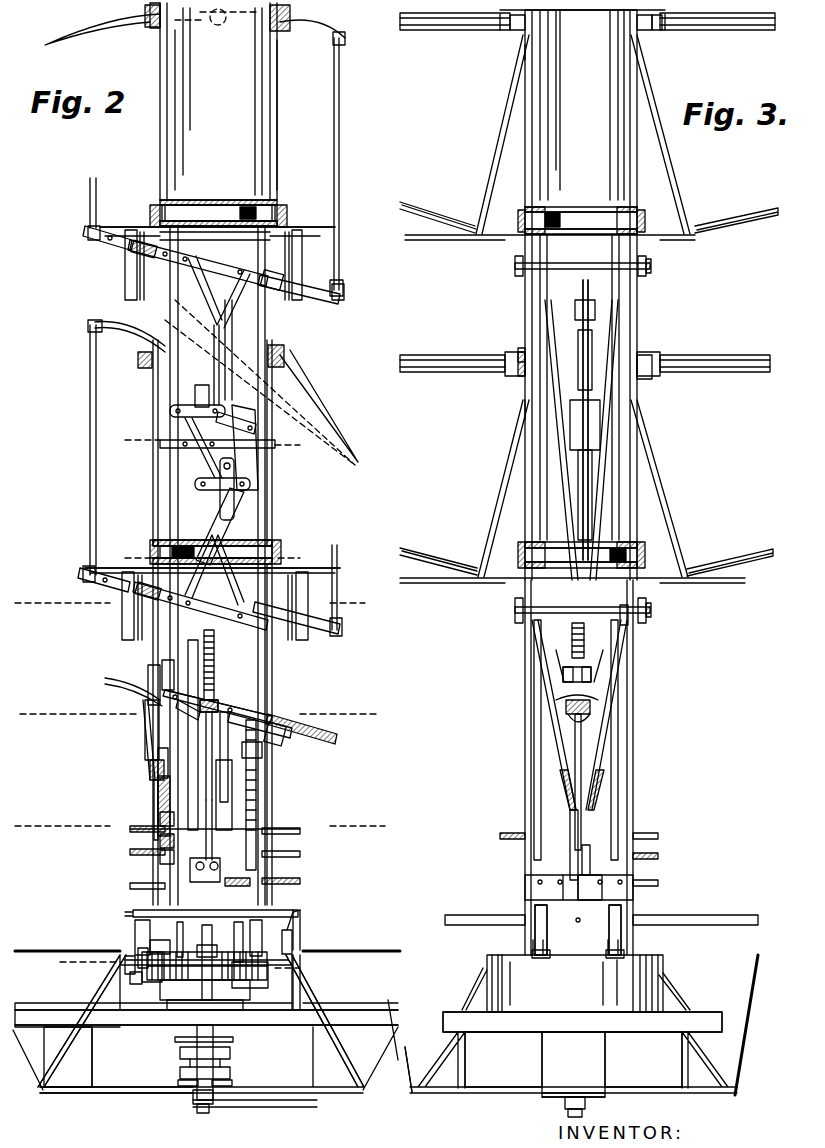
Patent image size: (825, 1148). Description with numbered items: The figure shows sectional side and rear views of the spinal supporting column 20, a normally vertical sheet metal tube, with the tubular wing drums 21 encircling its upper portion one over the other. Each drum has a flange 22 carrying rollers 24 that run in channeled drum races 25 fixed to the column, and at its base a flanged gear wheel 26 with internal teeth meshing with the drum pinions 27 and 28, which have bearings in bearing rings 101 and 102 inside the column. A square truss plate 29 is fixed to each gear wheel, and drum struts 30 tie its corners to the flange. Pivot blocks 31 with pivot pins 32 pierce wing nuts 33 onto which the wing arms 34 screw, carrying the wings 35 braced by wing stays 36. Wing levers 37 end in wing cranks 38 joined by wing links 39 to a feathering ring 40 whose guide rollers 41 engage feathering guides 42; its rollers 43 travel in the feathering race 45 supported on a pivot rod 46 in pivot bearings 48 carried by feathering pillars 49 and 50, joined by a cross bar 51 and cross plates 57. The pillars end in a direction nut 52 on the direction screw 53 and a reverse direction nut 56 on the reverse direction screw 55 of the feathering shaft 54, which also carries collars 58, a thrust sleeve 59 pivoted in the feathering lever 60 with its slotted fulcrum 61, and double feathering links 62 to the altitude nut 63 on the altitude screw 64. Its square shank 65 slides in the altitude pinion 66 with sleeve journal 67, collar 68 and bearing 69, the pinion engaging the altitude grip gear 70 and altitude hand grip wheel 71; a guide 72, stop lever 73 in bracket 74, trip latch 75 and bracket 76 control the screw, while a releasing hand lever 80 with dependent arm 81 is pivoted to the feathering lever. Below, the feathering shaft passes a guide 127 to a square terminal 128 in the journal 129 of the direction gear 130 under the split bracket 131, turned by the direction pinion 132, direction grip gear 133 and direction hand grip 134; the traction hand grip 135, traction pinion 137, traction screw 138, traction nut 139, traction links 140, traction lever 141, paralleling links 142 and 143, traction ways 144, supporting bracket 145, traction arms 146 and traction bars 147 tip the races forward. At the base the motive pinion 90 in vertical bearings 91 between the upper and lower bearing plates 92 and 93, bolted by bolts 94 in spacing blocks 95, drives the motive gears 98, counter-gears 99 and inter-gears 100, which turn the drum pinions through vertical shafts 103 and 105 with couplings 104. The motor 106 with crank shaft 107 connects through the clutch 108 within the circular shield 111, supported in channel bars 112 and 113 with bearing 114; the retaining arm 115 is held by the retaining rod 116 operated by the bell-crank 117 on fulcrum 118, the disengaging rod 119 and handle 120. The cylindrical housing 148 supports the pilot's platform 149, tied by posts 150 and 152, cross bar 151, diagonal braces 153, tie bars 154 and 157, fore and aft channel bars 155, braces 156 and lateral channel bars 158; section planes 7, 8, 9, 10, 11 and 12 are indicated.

In FIG. 2, the section plane 7— 7 is at (208, 825).
In FIG. 2, the section plane 8— 8 is at (207, 709).
In FIG. 2, the section plane 9— 9 is at (213, 442).
In FIG. 2, the section plane 10— 10 is at (199, 592).
In FIG. 2, the section plane 11— 11 is at (178, 965).
In FIG. 2, the section plane 12— 12 is at (210, 558).
In FIG. 2, the spinal supporting column 20 is at (268, 120).
In FIG. 3, the spinal supporting column 20 is at (535, 110).
In FIG. 2, the wing drums 21 is at (277, 156).
In FIG. 3, the wing drums 21 is at (525, 45).
In FIG. 2, the flanges 22 is at (282, 30).
In FIG. 3, the flanges 22 is at (645, 32).
In FIG. 2, the rollers 24 is at (145, 12).
In FIG. 3, the rollers 24 is at (518, 355).
In FIG. 2, the drum races 25 is at (150, 6).
In FIG. 3, the drum races 25 is at (520, 350).
In FIG. 2, the flanged gear wheel 26 is at (152, 214).
In FIG. 3, the flanged gear wheel 26 is at (525, 216).
In FIG. 2, the upper drum pinion 27 is at (238, 213).
In FIG. 3, the upper drum pinion 27 is at (560, 218).
In FIG. 2, the lower drum pinion 28 is at (170, 552).
In FIG. 3, the lower drum pinion 28 is at (630, 554).
In FIG. 2, the truss plate 29 is at (312, 227).
In FIG. 3, the truss plate 29 is at (680, 238).
In FIG. 3, the drum struts 30 is at (503, 145).
In FIG. 3, the pivot blocks 31 is at (665, 30).
In FIG. 3, the pivot pins 32 is at (705, 30).
In FIG. 3, the wing nut 33 is at (510, 30).
In FIG. 2, the wing arms 34 is at (218, 25).
In FIG. 3, the wing arms 34 is at (424, 30).
In FIG. 2, the wings 35 is at (112, 32).
In FIG. 3, the wing stays 36 is at (421, 210).
In FIG. 2, the wing levers 37 is at (332, 40).
In FIG. 2, the wing cranks 38 is at (345, 36).
In FIG. 2, the wing links 39 is at (333, 126).
In FIG. 2, the feathering ring 40 is at (115, 240).
In FIG. 2, the guide rollers 41 is at (125, 248).
In FIG. 2, the feathering guides 42 is at (296, 258).
In FIG. 2, the rollers 43 is at (280, 300).
In FIG. 2, the feathering race 45 is at (155, 258).
In FIG. 3, the feathering race 45 is at (652, 266).
In FIG. 2, the pivot rod 46 is at (206, 268).
In FIG. 3, the pivot rod 46 is at (515, 268).
In FIG. 3, the pivot bearings 48 is at (518, 258).
In FIG. 3, the feathering pillars 49 is at (610, 388).
In FIG. 2, the feathering pillars 50 is at (213, 746).
In FIG. 3, the feathering pillars 50 is at (556, 740).
In FIG. 3, the cross bar 51 is at (588, 282).
In FIG. 2, the direction nut 52 is at (214, 648).
In FIG. 3, the direction nut 52 is at (586, 643).
In FIG. 3, the direction screw 53 is at (566, 650).
In FIG. 2, the feathering shaft 54 is at (213, 768).
In FIG. 3, the feathering shaft 54 is at (594, 776).
In FIG. 2, the reverse direction screw 55 is at (221, 689).
In FIG. 3, the reverse direction screw 55 is at (594, 700).
In FIG. 2, the reverse direction nut 56 is at (204, 666).
In FIG. 3, the reverse direction nut 56 is at (563, 672).
In FIG. 3, the cross plates 57 is at (594, 668).
In FIG. 2, the collars 58 is at (221, 698).
In FIG. 3, the collars 58 is at (592, 714).
In FIG. 2, the thrust sleeve 59 is at (195, 718).
In FIG. 3, the thrust sleeve 59 is at (570, 718).
In FIG. 2, the feathering lever 60 is at (203, 688).
In FIG. 3, the feathering lever 60 is at (570, 700).
In FIG. 2, the slotted fulcrum 61 is at (260, 716).
In FIG. 2, the double feathering links 62 is at (145, 724).
In FIG. 2, the altitude nut 63 is at (166, 775).
In FIG. 2, the altitude screw 64 is at (166, 794).
In FIG. 2, the square shank 65 is at (150, 885).
In FIG. 2, the altitude pinion 66 is at (166, 820).
In FIG. 2, the sleeve journal 67 is at (166, 840).
In FIG. 2, the collar 68 is at (166, 857).
In FIG. 2, the bearing 69 is at (150, 841).
In FIG. 2, the altitude grip gear 70 is at (270, 826).
In FIG. 3, the altitude grip gear 70 is at (508, 836).
In FIG. 2, the altitude hand grip wheel 71 is at (280, 832).
In FIG. 3, the altitude hand grip wheel 71 is at (658, 836).
In FIG. 2, the guide 72 is at (165, 756).
In FIG. 2, the stop lever 73 is at (148, 744).
In FIG. 2, the bracket 74 is at (145, 768).
In FIG. 2, the trip latch 75 is at (120, 686).
In FIG. 2, the bracket 76 is at (150, 680).
In FIG. 2, the releasing hand lever 80 is at (300, 734).
In FIG. 2, the dependent arm 81 is at (285, 748).
In FIG. 2, the motive pinion 90 is at (248, 988).
In FIG. 2, the vertical bearings 91 is at (208, 955).
In FIG. 2, the upper bearing plate 92 is at (150, 945).
In FIG. 2, the lower bearing plate 93 is at (136, 980).
In FIG. 2, the bolts 94 is at (140, 950).
In FIG. 2, the spacing blocks 95 is at (130, 966).
In FIG. 2, the motive gears 98 is at (130, 978).
In FIG. 2, the counter-gears 99 is at (272, 958).
In FIG. 2, the inter-gears 100 is at (150, 950).
In FIG. 2, the bearing ring 101 is at (198, 203).
In FIG. 3, the bearing ring 101 is at (579, 207).
In FIG. 2, the bearing ring 102 is at (335, 228).
In FIG. 2, the vertical connecting shafts 103 is at (188, 658).
In FIG. 3, the vertical connecting shafts 103 is at (620, 746).
In FIG. 3, the couplings 104 is at (650, 620).
In FIG. 2, the vertical shafts 105 is at (228, 322).
In FIG. 3, the vertical shafts 105 is at (536, 760).
In FIG. 2, the motor 106 is at (218, 1038).
In FIG. 2, the crank shaft 107 is at (180, 1054).
In FIG. 2, the clutch 108 is at (225, 1018).
In FIG. 2, the circular shield 111 is at (207, 981).
In FIG. 2, the upper channel bar 112 is at (162, 1012).
In FIG. 2, the lower channel bar 113 is at (160, 1090).
In FIG. 3, the lower channel bar 113 is at (545, 1100).
In FIG. 2, the bearing 114 is at (190, 1098).
In FIG. 3, the bearing 114 is at (588, 1098).
In FIG. 2, the retaining arm 115 is at (240, 1104).
In FIG. 3, the retaining arm 115 is at (565, 1108).
In FIG. 2, the retaining rod 116 is at (312, 982).
In FIG. 2, the bell-crank 117 is at (295, 925).
In FIG. 2, the fulcrum 118 is at (292, 948).
In FIG. 2, the disengaging rod 119 is at (262, 925).
In FIG. 2, the handle 120 is at (178, 884).
In FIG. 2, the guide 127 is at (218, 792).
In FIG. 3, the guide 127 is at (562, 788).
In FIG. 2, the terminal 128 is at (214, 812).
In FIG. 3, the terminal 128 is at (570, 808).
In FIG. 3, the journal 129 is at (584, 848).
In FIG. 2, the direction gear 130 is at (235, 886).
In FIG. 3, the direction gear 130 is at (550, 888).
In FIG. 3, the split bracket 131 is at (594, 878).
In FIG. 3, the direction pinion 132 is at (612, 888).
In FIG. 3, the direction grip gear 133 is at (525, 878).
In FIG. 2, the direction hand grip 134 is at (280, 880).
In FIG. 3, the direction hand grip 134 is at (658, 882).
In FIG. 2, the traction hand grip 135 is at (280, 854).
In FIG. 3, the traction hand grip 135 is at (658, 856).
In FIG. 2, the traction pinion 137 is at (222, 862).
In FIG. 2, the traction screw 138 is at (256, 790).
In FIG. 2, the traction nut 139 is at (258, 770).
In FIG. 2, the traction links 140 is at (252, 498).
In FIG. 2, the traction lever 141 is at (248, 428).
In FIG. 2, the paralleling link 142 is at (185, 460).
In FIG. 2, the paralleling link 143 is at (258, 470).
In FIG. 2, the traction ways 144 is at (170, 409).
In FIG. 2, the supporting bracket 145 is at (160, 446).
In FIG. 2, the traction arms 146 is at (200, 374).
In FIG. 2, the traction bars 147 is at (212, 308).
In FIG. 3, the cylindrical housing 148 is at (575, 983).
In FIG. 2, the pilot's platform 149 is at (206, 1020).
In FIG. 3, the pilot's platform 149 is at (582, 1024).
In FIG. 2, the posts 150 is at (95, 1068).
In FIG. 3, the posts 150 is at (573, 1064).
In FIG. 2, the cross bar 151 is at (232, 1080).
In FIG. 3, the cross bar 151 is at (645, 1080).
In FIG. 3, the posts 152 is at (465, 1056).
In FIG. 2, the diagonal braces 153 is at (76, 1034).
In FIG. 2, the tie bars 154 is at (350, 988).
In FIG. 2, the fore and aft channel bars 155 is at (60, 955).
In FIG. 3, the braces 156 is at (478, 976).
In FIG. 3, the tie bars 157 is at (756, 972).
In FIG. 3, the lateral channel bars 158 is at (486, 920).